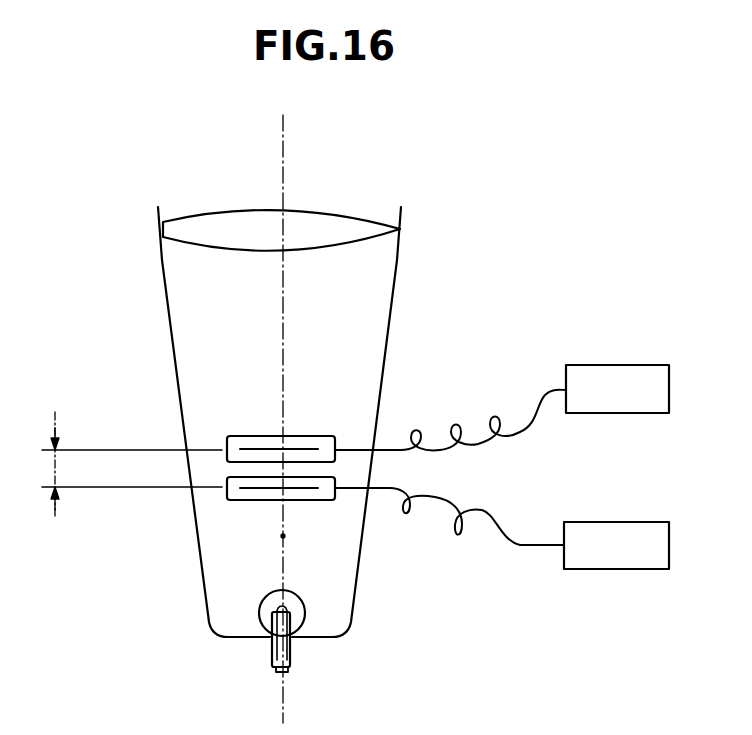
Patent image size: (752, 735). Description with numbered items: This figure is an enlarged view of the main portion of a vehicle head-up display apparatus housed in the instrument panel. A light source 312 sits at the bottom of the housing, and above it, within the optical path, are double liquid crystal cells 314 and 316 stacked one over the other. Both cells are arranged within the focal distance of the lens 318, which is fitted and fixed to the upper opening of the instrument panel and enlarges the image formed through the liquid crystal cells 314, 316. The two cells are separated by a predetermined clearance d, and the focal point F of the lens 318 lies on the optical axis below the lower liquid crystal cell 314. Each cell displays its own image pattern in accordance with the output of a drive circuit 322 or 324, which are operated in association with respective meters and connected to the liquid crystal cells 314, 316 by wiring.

The light source 312 is at (268, 650).
The liquid crystal cell 314 is at (232, 500).
The liquid crystal cell 316 is at (232, 436).
The lens 318 is at (200, 210).
The drive circuit 322 is at (605, 570).
The drive circuit 324 is at (627, 365).
The focal point F is at (285, 535).
The clearance d is at (125, 465).